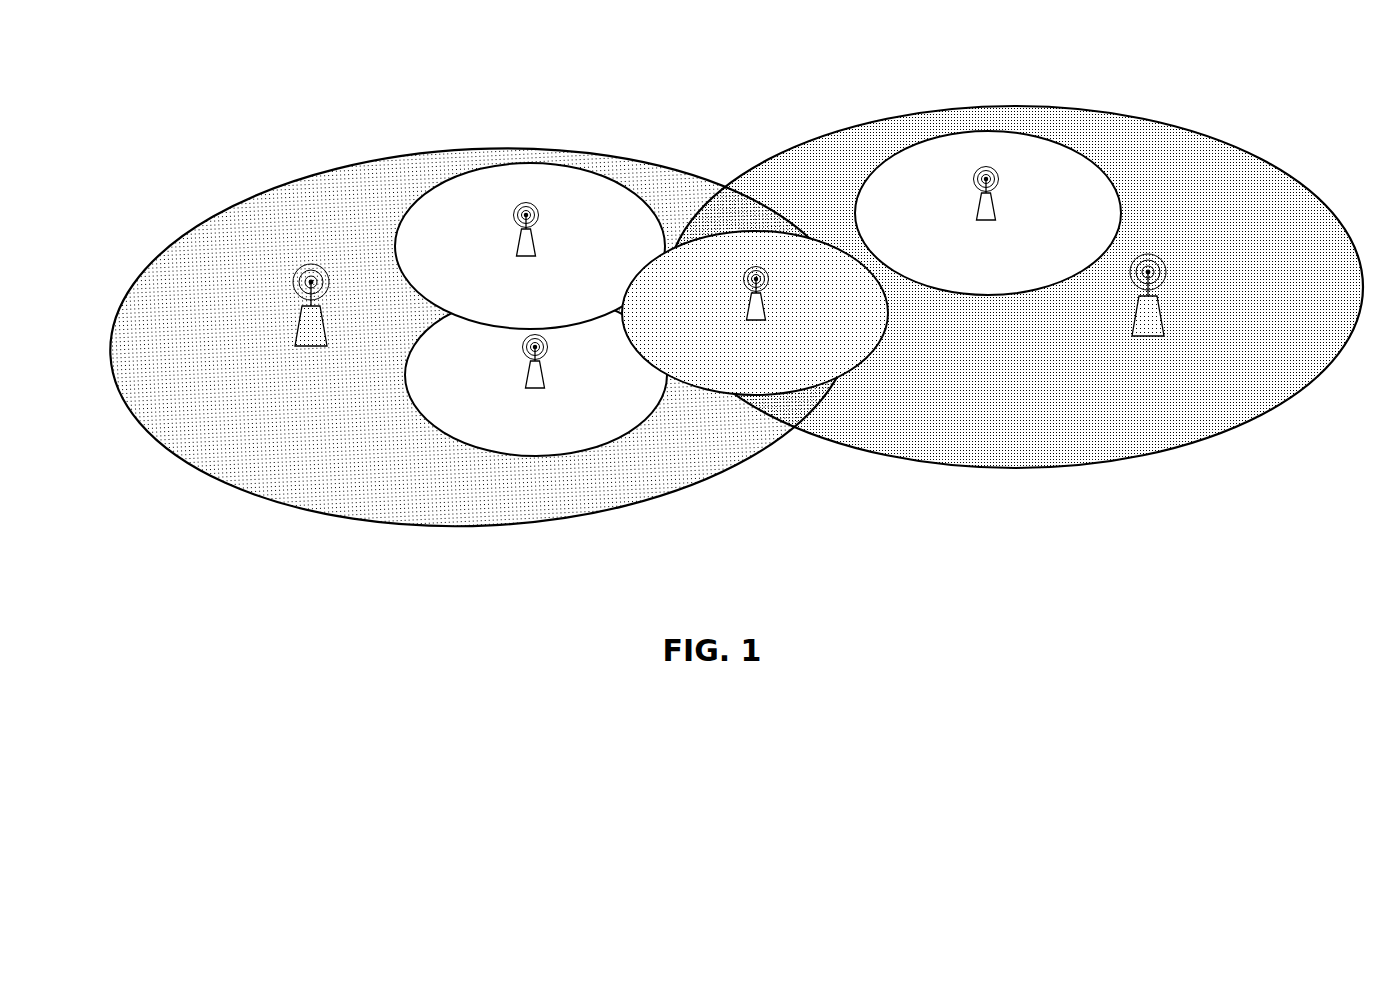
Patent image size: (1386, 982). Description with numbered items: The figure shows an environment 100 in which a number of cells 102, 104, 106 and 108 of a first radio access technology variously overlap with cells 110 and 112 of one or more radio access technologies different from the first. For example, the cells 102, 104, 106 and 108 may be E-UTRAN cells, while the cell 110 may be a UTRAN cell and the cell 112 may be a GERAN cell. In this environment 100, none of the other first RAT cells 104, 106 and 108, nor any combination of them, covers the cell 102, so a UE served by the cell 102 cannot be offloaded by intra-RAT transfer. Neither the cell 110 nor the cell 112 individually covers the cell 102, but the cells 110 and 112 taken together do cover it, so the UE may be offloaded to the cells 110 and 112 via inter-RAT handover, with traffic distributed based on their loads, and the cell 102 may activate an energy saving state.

The environment 100 is at (732, 300).
The cell 102 is at (740, 352).
The cell 104 is at (511, 287).
The cell 106 is at (521, 419).
The cell 108 is at (971, 252).
The cell 110 is at (304, 424).
The cell 112 is at (1136, 377).